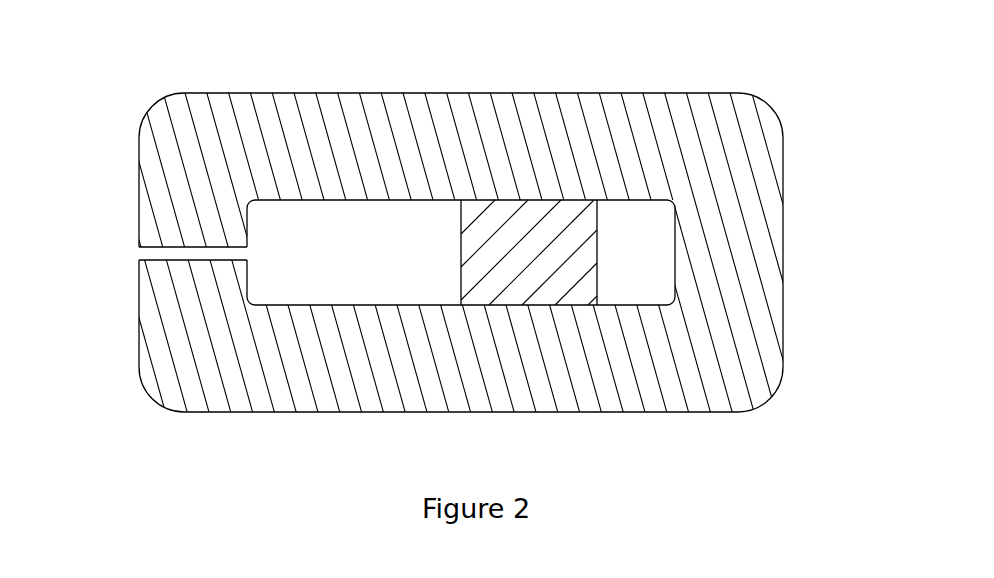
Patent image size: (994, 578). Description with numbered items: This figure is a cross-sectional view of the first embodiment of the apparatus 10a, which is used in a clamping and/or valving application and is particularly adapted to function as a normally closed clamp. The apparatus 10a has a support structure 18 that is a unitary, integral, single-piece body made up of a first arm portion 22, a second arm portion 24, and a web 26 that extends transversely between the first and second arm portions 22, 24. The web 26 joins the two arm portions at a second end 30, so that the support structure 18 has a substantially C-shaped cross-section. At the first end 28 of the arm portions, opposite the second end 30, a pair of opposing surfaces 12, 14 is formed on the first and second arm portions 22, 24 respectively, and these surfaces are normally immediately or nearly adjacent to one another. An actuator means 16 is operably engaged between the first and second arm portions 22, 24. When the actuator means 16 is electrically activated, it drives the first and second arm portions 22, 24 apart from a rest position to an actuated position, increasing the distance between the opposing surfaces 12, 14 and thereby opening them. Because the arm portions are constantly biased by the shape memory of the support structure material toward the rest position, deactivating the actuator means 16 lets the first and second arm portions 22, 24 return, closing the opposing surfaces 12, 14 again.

The apparatus 10a is at (650, 74).
The opposing surface 12 is at (247, 245).
The opposing surface 14 is at (148, 251).
The actuator means 16 is at (478, 247).
The support structure 18 is at (435, 88).
The first arm portion 22 is at (298, 135).
The second arm portion 24 is at (323, 398).
The web 26 is at (754, 282).
The first end 28 is at (138, 221).
The second end 30 is at (784, 210).